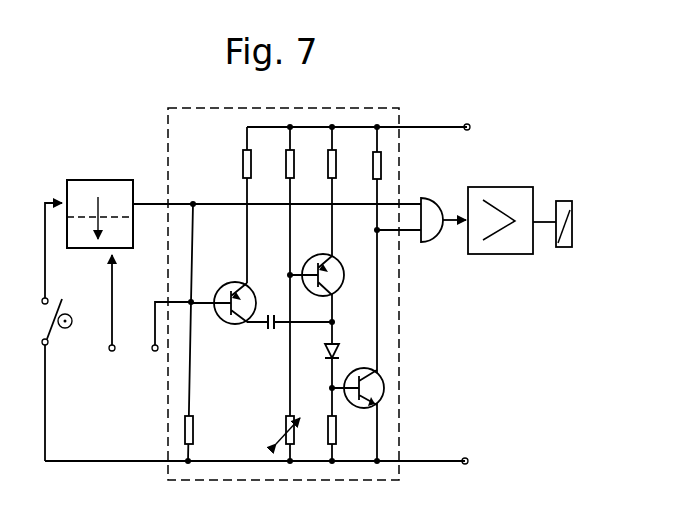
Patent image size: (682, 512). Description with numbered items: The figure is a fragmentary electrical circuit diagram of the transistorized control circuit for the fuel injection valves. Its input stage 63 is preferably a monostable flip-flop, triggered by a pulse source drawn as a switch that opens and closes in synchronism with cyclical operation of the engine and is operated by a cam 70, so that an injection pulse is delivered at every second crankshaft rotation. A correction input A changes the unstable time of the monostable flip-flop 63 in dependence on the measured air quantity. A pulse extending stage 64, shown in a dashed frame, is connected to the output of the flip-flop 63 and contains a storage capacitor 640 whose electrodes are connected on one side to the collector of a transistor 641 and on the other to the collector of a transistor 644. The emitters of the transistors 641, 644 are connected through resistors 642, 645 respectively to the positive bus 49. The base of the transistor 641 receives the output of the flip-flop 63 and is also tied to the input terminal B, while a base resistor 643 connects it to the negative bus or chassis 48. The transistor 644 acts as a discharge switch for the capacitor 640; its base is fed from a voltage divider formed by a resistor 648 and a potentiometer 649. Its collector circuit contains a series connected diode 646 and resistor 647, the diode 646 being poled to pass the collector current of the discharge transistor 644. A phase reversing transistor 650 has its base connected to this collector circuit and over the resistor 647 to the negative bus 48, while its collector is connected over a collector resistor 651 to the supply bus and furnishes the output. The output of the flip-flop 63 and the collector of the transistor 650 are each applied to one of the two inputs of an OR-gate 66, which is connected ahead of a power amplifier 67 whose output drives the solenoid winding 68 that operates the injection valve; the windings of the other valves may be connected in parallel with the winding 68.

The input stage 63 is at (84, 190).
The pulse extending stage 64 is at (168, 128).
The OR-gate 66 is at (428, 241).
The power amplifier 67 is at (500, 254).
The solenoid winding 68 is at (564, 247).
The cam 70 is at (58, 330).
The positive bus 49 is at (471, 127).
The negative bus 48 is at (428, 461).
The storage capacitor 640 is at (271, 329).
The transistor 641 is at (224, 318).
The resistor 642 is at (243, 164).
The base resistor 643 is at (193, 434).
The transistor 644 is at (334, 265).
The resistor 645 is at (334, 170).
The diode 646 is at (326, 352).
The resistor 647 is at (336, 432).
The resistor 648 is at (289, 170).
The potentiometer 649 is at (283, 427).
The phase reversing transistor 650 is at (381, 382).
The collector resistor 651 is at (381, 165).
The correction input A is at (112, 316).
The input terminal B is at (170, 340).